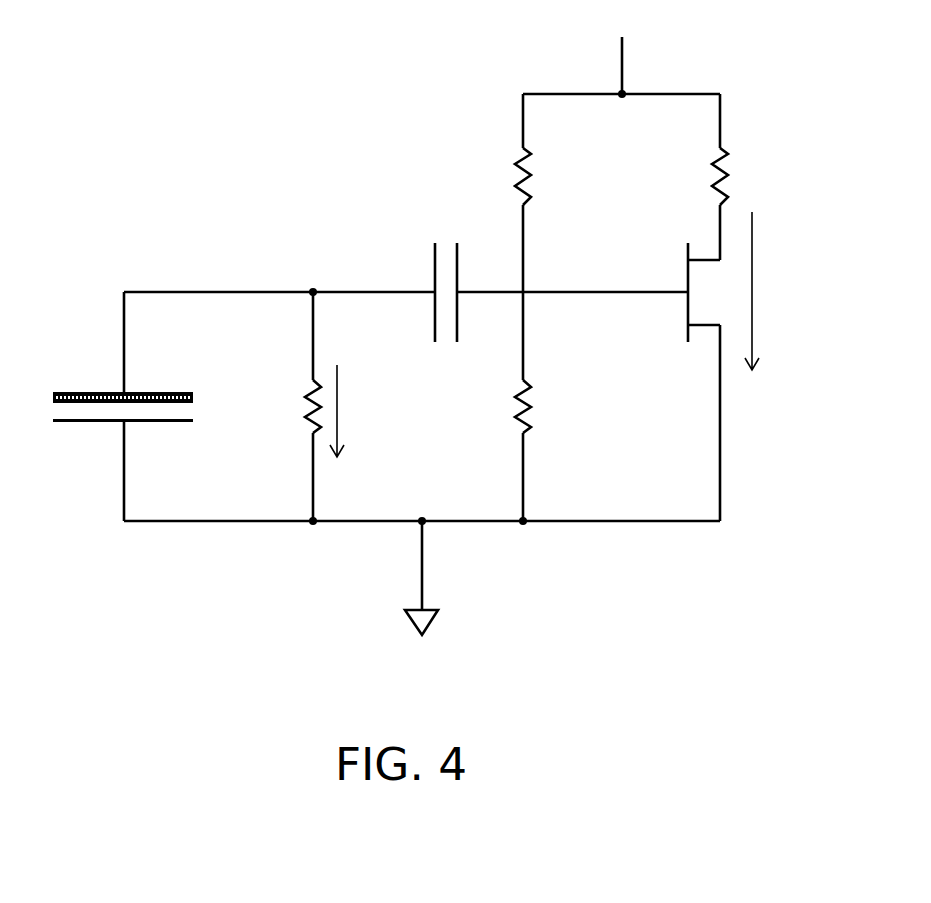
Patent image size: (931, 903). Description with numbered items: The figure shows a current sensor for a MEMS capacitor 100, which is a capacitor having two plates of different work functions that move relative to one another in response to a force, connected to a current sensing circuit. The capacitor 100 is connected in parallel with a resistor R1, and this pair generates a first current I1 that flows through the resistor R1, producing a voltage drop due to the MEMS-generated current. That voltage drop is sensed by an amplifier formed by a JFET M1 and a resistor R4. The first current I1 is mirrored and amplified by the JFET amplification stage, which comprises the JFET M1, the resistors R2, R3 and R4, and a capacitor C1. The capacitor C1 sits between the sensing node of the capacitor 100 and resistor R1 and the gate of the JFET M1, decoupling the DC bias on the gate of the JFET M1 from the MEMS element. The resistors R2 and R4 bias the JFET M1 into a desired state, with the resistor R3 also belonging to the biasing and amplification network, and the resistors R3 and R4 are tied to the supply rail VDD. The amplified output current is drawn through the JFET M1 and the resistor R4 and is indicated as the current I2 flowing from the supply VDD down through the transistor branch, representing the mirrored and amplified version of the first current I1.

The capacitor 100 is at (82, 392).
The resistor R1 is at (294, 406).
The resistor R2 is at (543, 406).
The resistor R3 is at (543, 176).
The resistor R4 is at (741, 176).
The capacitor C1 is at (433, 268).
The JFET M1 is at (712, 292).
The first current I1 is at (348, 411).
The current I2 is at (764, 291).
The supply voltage VDD is at (622, 48).